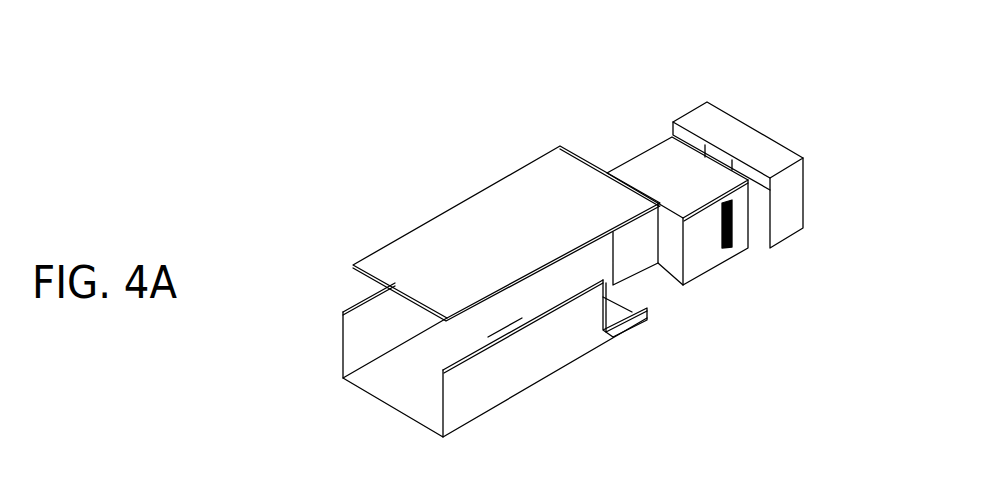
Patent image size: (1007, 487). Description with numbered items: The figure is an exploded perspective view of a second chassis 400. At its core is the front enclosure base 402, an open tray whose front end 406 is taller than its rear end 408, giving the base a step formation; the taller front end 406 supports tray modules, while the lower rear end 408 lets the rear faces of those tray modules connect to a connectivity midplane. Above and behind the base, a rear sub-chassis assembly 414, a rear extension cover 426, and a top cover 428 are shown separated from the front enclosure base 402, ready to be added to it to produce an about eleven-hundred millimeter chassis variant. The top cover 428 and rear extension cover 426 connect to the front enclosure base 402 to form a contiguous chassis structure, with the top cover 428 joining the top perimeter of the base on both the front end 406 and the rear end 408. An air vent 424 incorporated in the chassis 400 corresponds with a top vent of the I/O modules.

The second chassis 400 is at (141, 103).
The front enclosure base 402 is at (537, 385).
The front end 406 is at (368, 415).
The rear end 408 is at (672, 309).
The rear sub-chassis assembly 414 is at (647, 148).
The air vent 424 is at (732, 248).
The rear extension cover 426 is at (752, 126).
The top cover 428 is at (445, 206).